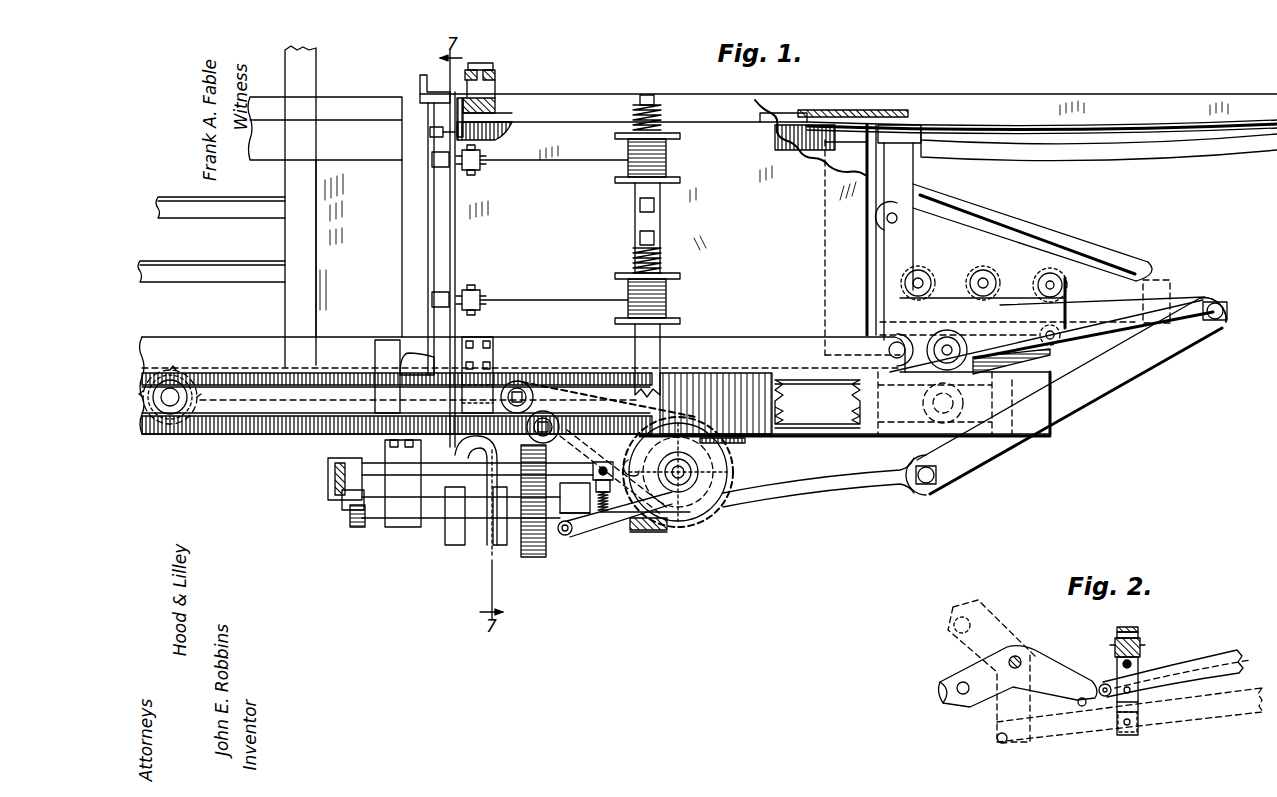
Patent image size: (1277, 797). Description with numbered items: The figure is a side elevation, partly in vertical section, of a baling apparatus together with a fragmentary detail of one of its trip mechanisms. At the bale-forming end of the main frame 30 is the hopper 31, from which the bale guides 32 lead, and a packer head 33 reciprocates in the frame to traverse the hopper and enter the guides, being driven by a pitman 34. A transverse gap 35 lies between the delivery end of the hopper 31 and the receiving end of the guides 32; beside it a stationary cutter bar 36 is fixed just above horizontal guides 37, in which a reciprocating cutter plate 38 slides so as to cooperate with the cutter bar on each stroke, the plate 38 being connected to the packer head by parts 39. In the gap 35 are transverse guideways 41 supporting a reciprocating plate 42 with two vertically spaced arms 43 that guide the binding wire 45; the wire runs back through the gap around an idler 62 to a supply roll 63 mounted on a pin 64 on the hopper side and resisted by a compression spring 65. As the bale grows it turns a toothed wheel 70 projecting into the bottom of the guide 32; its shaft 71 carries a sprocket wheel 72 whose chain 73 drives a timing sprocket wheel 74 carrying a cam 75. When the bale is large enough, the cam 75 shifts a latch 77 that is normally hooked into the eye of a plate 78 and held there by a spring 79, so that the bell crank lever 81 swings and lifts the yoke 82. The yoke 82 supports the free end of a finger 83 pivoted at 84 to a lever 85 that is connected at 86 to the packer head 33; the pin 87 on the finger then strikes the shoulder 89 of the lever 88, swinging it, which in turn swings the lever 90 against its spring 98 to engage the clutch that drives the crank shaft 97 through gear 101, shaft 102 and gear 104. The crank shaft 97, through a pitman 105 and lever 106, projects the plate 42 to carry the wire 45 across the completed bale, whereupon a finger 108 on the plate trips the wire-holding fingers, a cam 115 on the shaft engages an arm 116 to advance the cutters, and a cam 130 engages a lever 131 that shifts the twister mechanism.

In FIG. 1, the bale-forming end of the main frame 30 is at (305, 443).
In FIG. 1, the hopper 31 is at (618, 240).
In FIG. 1, the bale guides 32 is at (267, 273).
In FIG. 1, the packer head 33 is at (935, 225).
In FIG. 1, the pitman 34 is at (835, 412).
In FIG. 1, the transverse gap 35 is at (412, 192).
In FIG. 1, the stationary cutter bar 36 is at (497, 102).
In FIG. 1, the horizontal guides 37 is at (775, 105).
In FIG. 1, the reciprocating cutter plate 38 is at (828, 110).
In FIG. 1, the connecting parts 39 is at (965, 125).
In FIG. 1, the transverse guideways 41 is at (420, 100).
In FIG. 1, the reciprocating plate 42 is at (420, 213).
In FIG. 1, the vertically-spaced arms 43 is at (432, 160).
In FIG. 1, the binding wire 45 is at (581, 162).
In FIG. 1, the idler 62 is at (484, 168).
In FIG. 1, the supply roll 63 is at (668, 158).
In FIG. 1, the pin 64 is at (655, 95).
In FIG. 1, the compression spring 65 is at (660, 120).
In FIG. 1, the toothed wheel 70 is at (170, 400).
In FIG. 1, the shaft 71 is at (183, 410).
In FIG. 1, the sprocket wheel 72 is at (158, 427).
In FIG. 1, the chain 73 is at (265, 420).
In FIG. 1, the timing sprocket wheel 74 is at (688, 520).
In FIG. 1, the cam 75 is at (730, 510).
In FIG. 1, the latch 77 is at (670, 422).
In FIG. 1, the plate 78 is at (690, 373).
In FIG. 1, the spring 79 is at (745, 443).
In FIG. 2, the bell crank lever 81 is at (1130, 627).
In FIG. 2, the yoke 82 is at (1140, 646).
In FIG. 1, the finger 83 is at (825, 483).
In FIG. 2, the finger 83 is at (1186, 675).
In FIG. 1, the pivot 84 is at (923, 482).
In FIG. 1, the lever 85 is at (1082, 380).
In FIG. 1, the connection 86 is at (1215, 302).
In FIG. 1, the pin 87 is at (567, 536).
In FIG. 2, the pin 87 is at (1104, 698).
In FIG. 1, the lever 88 is at (628, 520).
In FIG. 2, the lever 88 is at (1063, 676).
In FIG. 2, the shoulder 89 is at (1080, 708).
In FIG. 1, the lever 90 is at (585, 462).
In FIG. 2, the lever 90 is at (961, 695).
In FIG. 1, the crank shaft 97 is at (556, 515).
In FIG. 1, the spring 98 is at (605, 518).
In FIG. 1, the gear 101 is at (583, 352).
In FIG. 1, the shaft 102 is at (510, 446).
In FIG. 1, the gear 104 is at (500, 575).
In FIG. 1, the pitman 105 is at (458, 540).
In FIG. 1, the lever 106 is at (475, 326).
In FIG. 1, the finger 108 is at (430, 130).
In FIG. 1, the cam 115 is at (440, 520).
In FIG. 1, the arm 116 is at (410, 495).
In FIG. 1, the cam 130 is at (352, 528).
In FIG. 1, the lever 131 is at (335, 480).